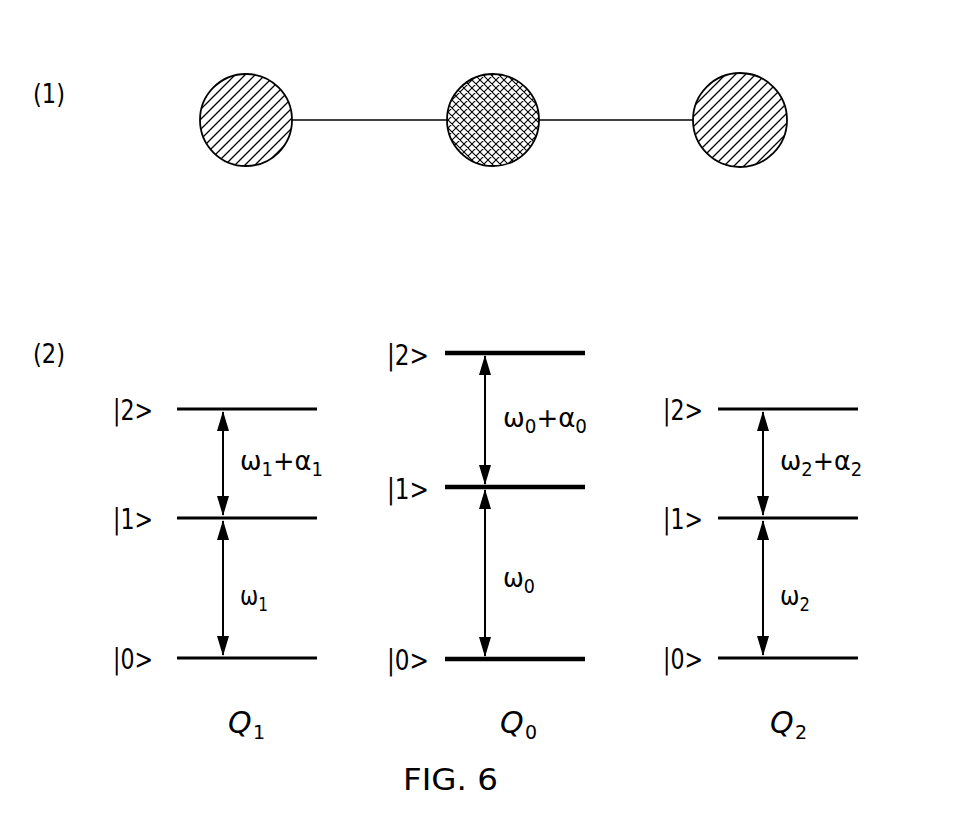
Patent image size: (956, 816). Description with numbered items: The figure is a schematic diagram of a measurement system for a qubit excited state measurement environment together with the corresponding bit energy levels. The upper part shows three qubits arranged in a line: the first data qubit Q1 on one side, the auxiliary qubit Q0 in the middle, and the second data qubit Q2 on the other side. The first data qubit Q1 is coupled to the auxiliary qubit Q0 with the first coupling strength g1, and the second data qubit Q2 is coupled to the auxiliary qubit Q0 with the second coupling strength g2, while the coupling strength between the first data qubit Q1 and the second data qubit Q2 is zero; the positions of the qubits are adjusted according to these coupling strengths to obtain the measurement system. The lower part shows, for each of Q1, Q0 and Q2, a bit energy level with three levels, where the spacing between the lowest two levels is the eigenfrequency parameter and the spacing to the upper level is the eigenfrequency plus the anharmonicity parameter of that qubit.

The first data qubit Q1 is at (246, 153).
The auxiliary qubit Q0 is at (493, 153).
The second data qubit Q2 is at (740, 153).
The first coupling strength g1 is at (369, 89).
The second coupling strength g2 is at (616, 89).